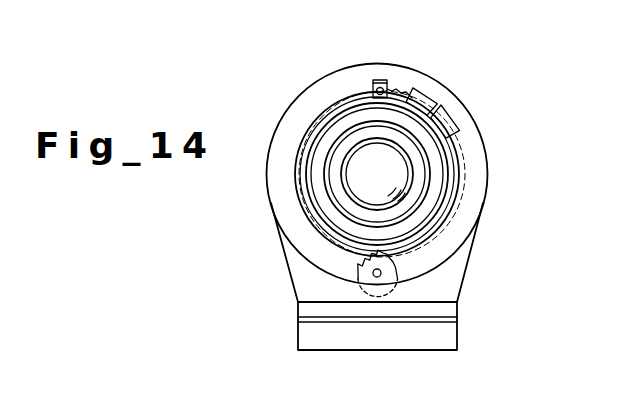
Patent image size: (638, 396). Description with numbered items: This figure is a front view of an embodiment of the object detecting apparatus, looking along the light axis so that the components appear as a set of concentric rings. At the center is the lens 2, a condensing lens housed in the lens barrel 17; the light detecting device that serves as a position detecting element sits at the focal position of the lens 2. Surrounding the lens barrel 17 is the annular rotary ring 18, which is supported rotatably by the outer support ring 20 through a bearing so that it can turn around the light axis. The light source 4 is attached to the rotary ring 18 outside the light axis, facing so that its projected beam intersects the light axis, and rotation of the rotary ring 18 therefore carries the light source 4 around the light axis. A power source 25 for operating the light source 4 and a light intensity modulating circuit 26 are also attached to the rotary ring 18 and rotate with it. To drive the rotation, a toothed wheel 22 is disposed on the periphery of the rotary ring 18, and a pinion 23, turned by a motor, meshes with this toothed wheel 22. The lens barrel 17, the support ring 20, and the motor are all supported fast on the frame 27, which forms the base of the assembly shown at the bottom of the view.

The lens 2 is at (360, 185).
The light source 4 is at (374, 80).
The lens barrel 17 is at (332, 150).
The rotary ring 18 is at (338, 118).
The support ring 20 is at (478, 162).
The toothed wheel 22 is at (397, 257).
The pinion 23 is at (397, 273).
The power source 25 is at (455, 125).
The light intensity modulating circuit 26 is at (422, 103).
The frame 27 is at (307, 335).